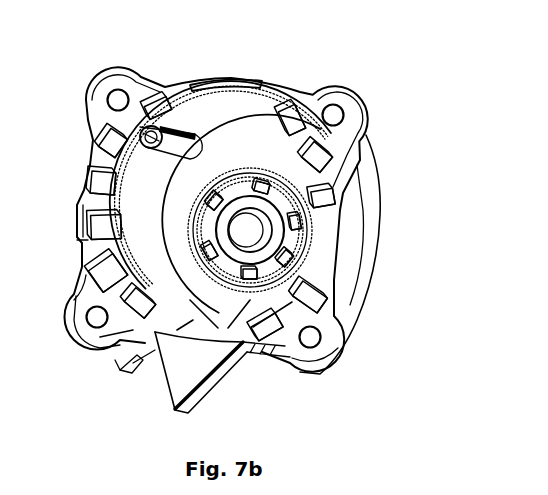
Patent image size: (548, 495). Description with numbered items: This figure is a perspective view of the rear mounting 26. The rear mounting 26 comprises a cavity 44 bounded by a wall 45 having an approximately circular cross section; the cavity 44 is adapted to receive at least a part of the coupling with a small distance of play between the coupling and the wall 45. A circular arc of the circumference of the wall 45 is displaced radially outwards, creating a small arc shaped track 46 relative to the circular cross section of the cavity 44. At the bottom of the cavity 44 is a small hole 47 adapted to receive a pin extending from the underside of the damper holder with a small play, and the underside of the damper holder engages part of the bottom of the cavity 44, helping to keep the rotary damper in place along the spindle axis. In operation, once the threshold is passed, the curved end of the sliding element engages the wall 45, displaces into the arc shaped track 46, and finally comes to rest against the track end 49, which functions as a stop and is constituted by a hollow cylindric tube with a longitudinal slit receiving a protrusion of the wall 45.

The rear mounting 26 is at (375, 89).
The cavity 44 is at (168, 283).
The wall 45 is at (132, 200).
The arc shaped track 46 is at (223, 133).
The hole 47 is at (267, 230).
The track end 49 is at (165, 125).